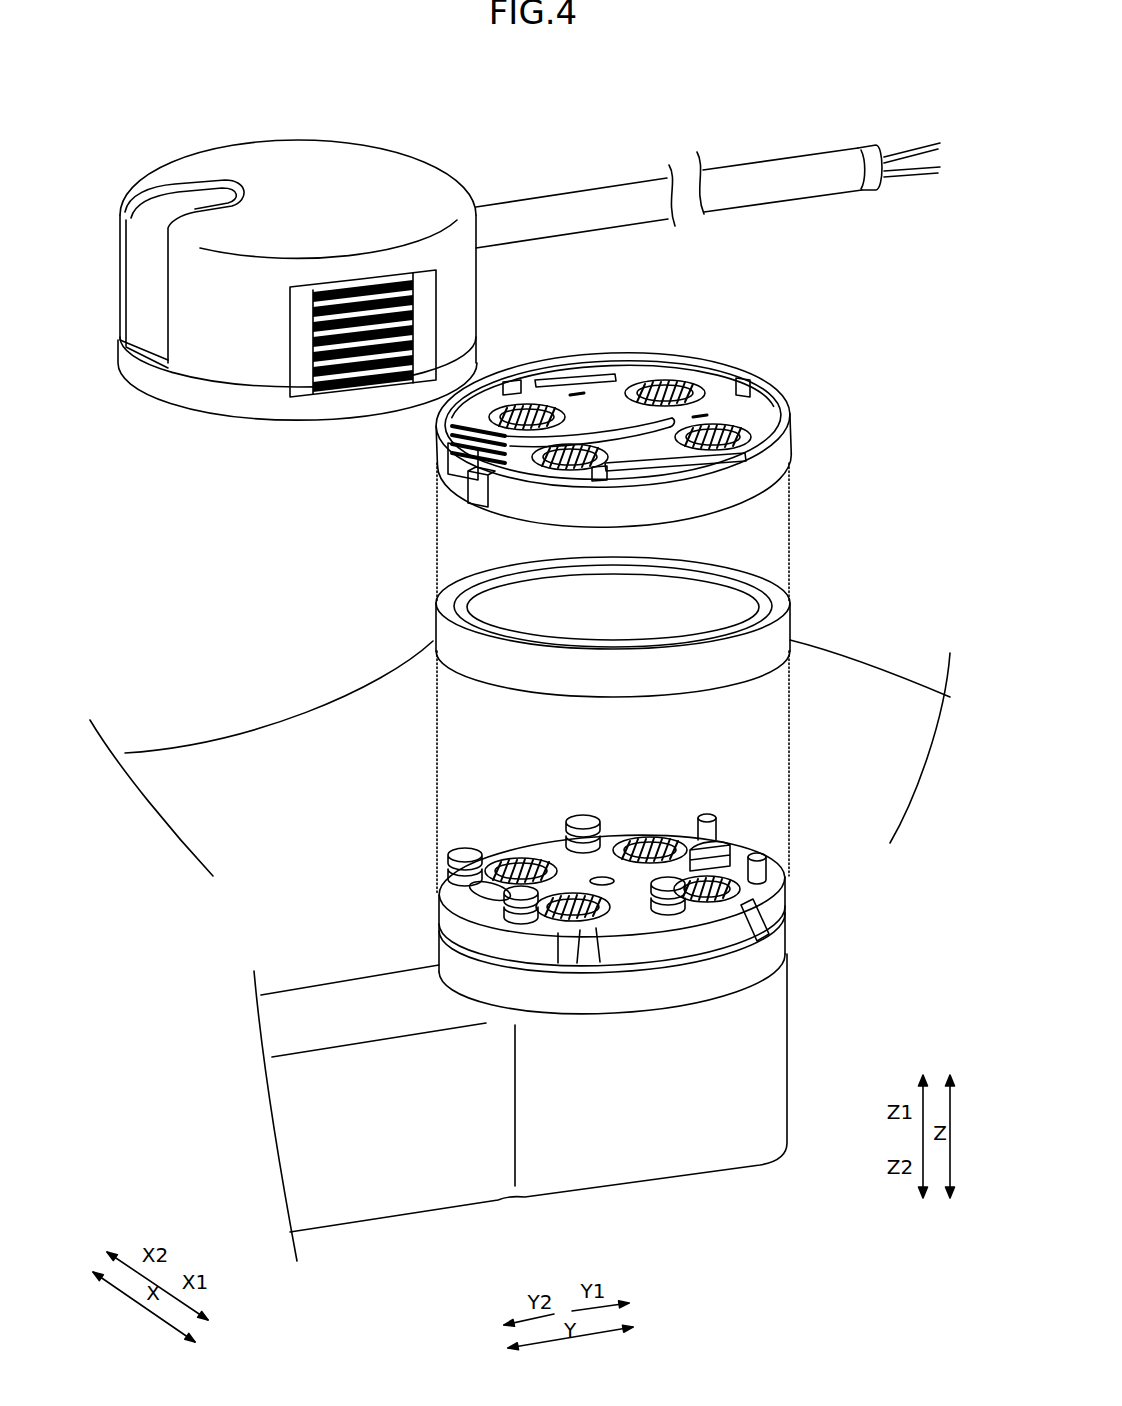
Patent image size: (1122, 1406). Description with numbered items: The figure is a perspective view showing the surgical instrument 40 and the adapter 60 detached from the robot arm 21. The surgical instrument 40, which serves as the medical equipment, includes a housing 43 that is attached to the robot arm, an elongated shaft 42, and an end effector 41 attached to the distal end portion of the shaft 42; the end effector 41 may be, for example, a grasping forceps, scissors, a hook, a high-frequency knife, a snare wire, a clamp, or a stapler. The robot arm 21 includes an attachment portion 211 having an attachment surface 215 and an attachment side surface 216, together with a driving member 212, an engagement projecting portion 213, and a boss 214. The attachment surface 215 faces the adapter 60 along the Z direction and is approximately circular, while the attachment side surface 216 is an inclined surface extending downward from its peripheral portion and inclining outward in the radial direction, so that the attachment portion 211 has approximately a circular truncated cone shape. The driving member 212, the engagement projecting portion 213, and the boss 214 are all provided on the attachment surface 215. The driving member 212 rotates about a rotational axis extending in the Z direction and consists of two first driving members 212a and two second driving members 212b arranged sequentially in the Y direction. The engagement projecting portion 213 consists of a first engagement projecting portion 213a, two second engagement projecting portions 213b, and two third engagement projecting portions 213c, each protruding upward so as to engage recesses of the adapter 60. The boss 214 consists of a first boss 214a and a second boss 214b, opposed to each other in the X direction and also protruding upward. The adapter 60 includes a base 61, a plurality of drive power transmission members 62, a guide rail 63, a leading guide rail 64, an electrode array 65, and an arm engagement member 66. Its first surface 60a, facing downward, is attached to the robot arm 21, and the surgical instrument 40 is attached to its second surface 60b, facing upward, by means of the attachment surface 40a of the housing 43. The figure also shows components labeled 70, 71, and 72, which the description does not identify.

The surgical instrument 40 is at (507, 137).
The housing 43 is at (317, 187).
The attachment surface 40a is at (307, 430).
The shaft 42 is at (583, 200).
The end effector 41 is at (902, 150).
The adapter 60 is at (828, 403).
The first surface 60a is at (678, 533).
The second surface 60b is at (623, 397).
The base 61 is at (775, 455).
The drive power transmission members 62 is at (527, 410).
The guide rail 63 is at (560, 373).
The leading guide rail 64 is at (607, 420).
The electrode array 65 is at (443, 448).
The arm engagement member 66 is at (777, 383).
The housing 70 is at (900, 628).
The housing outer surface 71 is at (853, 670).
The recess of housing 72 is at (460, 610).
The robot arm 21 is at (845, 918).
The attachment portion 211 is at (543, 842).
The driving member 212 is at (679, 890).
The first driving members 212a is at (650, 837).
The second driving members 212b is at (517, 858).
The engagement projecting portion 213 is at (444, 857).
The first engagement projecting portion 213a is at (717, 833).
The second engagement projecting portions 213b is at (585, 816).
The third engagement projecting portions 213c is at (470, 827).
The boss 214 is at (772, 815).
The first boss 214a is at (757, 855).
The second boss 214b is at (705, 815).
The attachment surface 215 is at (442, 966).
The attachment side surface 216 is at (444, 904).